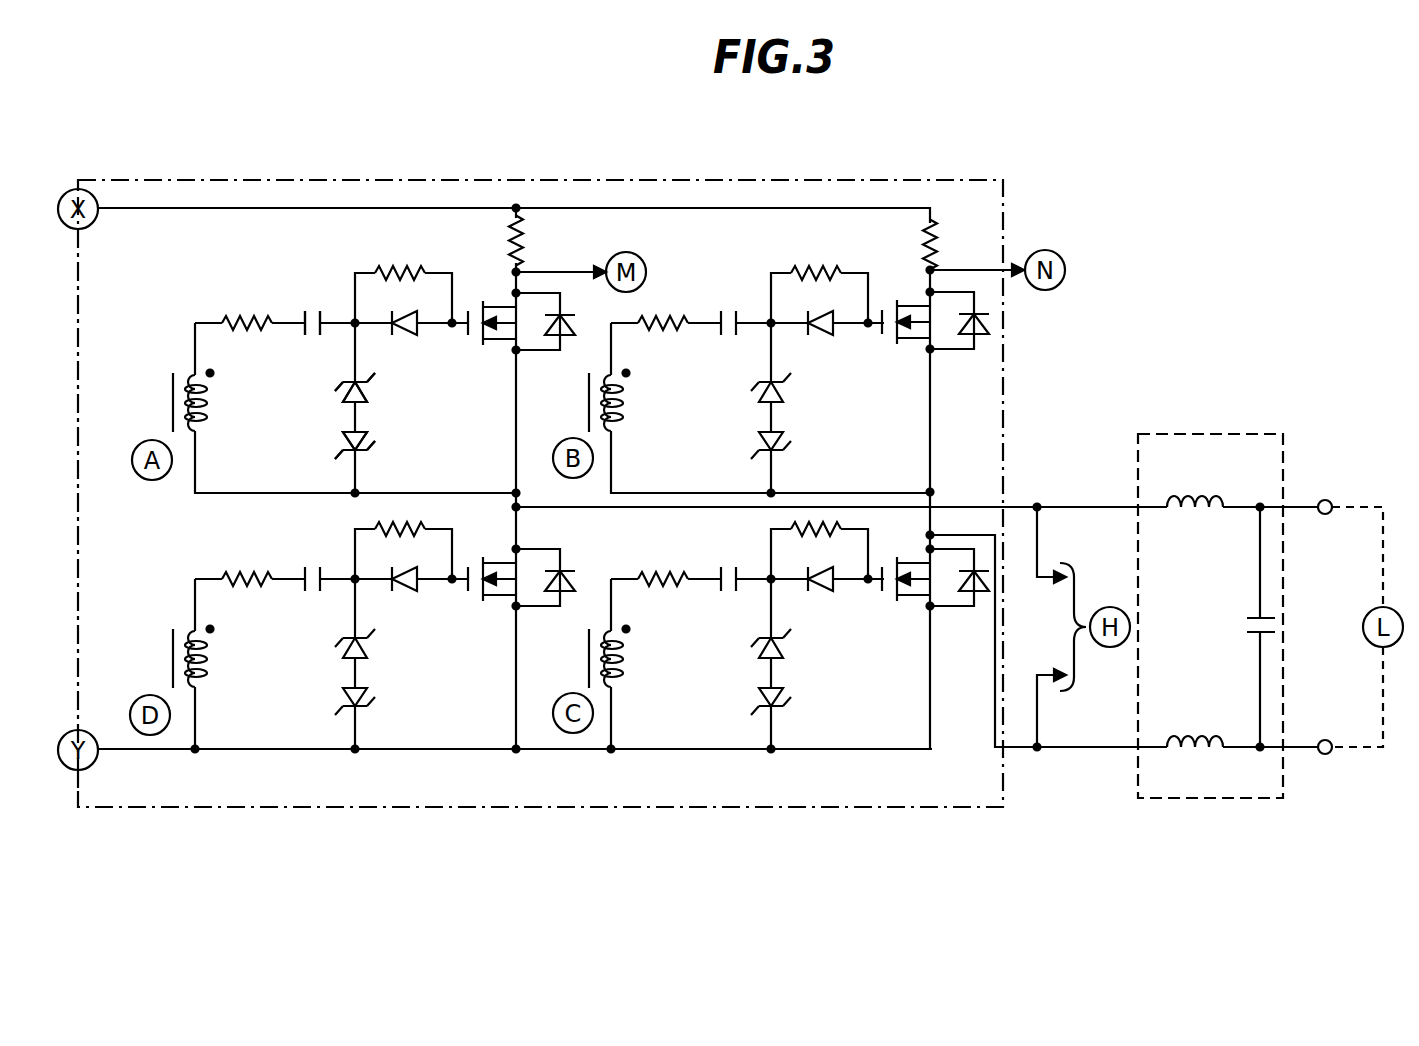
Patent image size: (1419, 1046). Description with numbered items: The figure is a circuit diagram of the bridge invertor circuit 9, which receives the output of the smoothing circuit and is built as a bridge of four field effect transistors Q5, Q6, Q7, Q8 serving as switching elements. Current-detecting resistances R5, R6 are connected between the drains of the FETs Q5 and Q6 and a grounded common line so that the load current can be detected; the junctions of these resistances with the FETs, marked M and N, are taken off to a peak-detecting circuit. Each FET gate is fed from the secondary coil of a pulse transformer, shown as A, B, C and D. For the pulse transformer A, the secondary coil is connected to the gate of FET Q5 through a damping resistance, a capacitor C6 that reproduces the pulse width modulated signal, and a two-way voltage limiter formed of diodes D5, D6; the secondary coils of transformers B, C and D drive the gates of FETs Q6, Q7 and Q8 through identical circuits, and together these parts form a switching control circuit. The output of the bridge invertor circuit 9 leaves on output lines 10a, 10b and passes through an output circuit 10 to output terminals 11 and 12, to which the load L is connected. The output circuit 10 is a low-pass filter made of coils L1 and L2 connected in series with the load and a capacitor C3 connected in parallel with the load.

The bridge invertor circuit 9 is at (933, 806).
The output circuit 10 is at (1184, 665).
The output line 10a is at (1067, 507).
The output line 10b is at (1097, 749).
The output terminal 11 is at (1331, 500).
The output terminal 12 is at (1331, 754).
The current-detecting resistance R5 is at (537, 241).
The current-detecting resistance R6 is at (951, 245).
The capacitor C6 is at (313, 308).
The diode D5 is at (377, 390).
The diode D6 is at (377, 444).
The FET Q5 is at (518, 334).
The FET Q6 is at (933, 333).
The FET Q7 is at (932, 590).
The FET Q8 is at (516, 590).
The coil L1 is at (1195, 533).
The coil L2 is at (1195, 723).
The capacitor C3 is at (1239, 627).